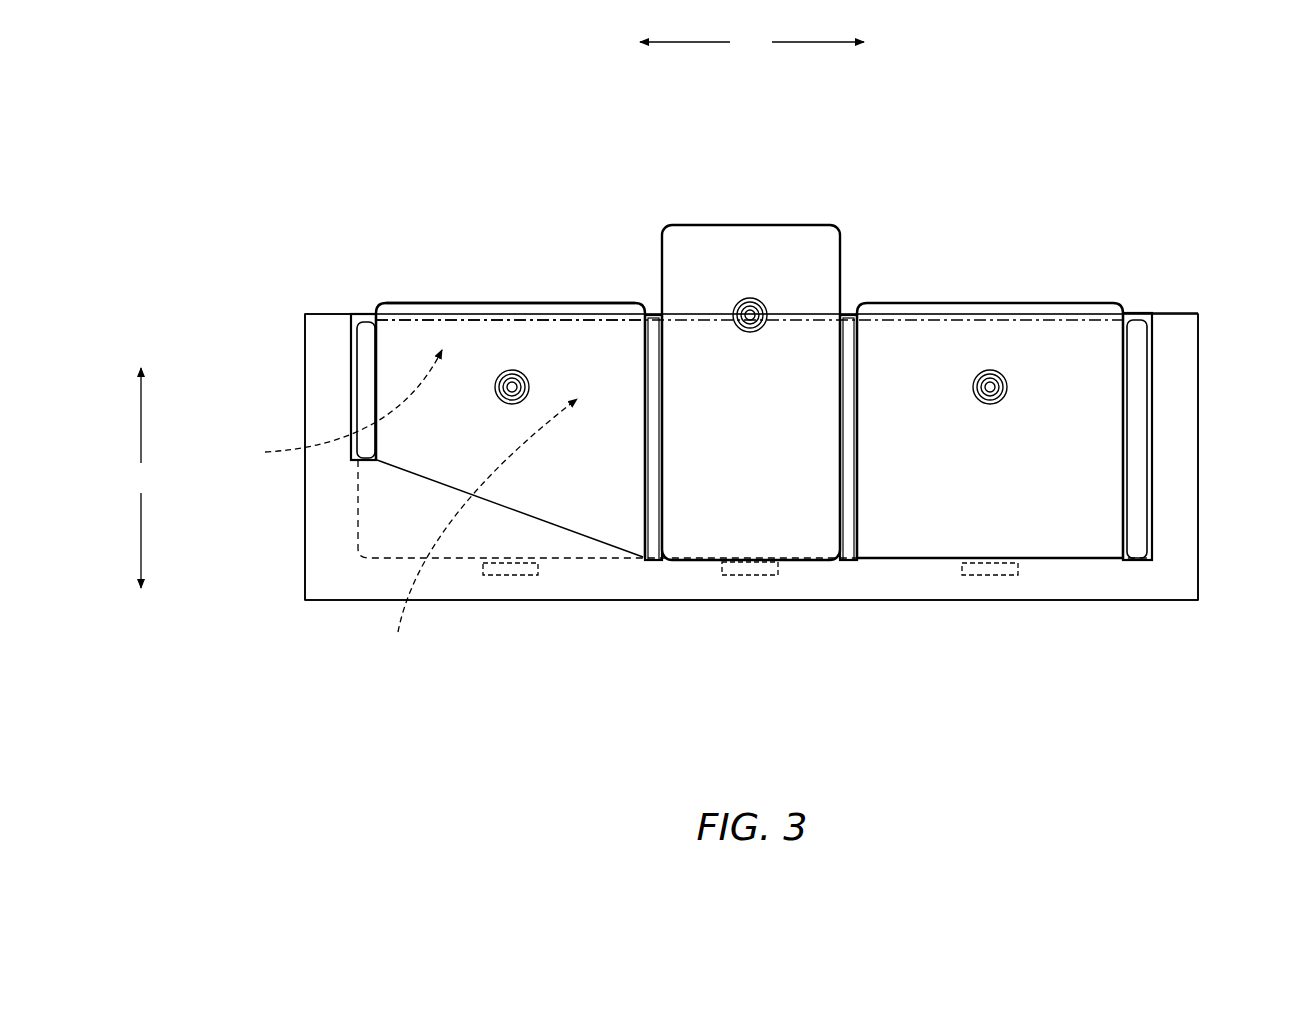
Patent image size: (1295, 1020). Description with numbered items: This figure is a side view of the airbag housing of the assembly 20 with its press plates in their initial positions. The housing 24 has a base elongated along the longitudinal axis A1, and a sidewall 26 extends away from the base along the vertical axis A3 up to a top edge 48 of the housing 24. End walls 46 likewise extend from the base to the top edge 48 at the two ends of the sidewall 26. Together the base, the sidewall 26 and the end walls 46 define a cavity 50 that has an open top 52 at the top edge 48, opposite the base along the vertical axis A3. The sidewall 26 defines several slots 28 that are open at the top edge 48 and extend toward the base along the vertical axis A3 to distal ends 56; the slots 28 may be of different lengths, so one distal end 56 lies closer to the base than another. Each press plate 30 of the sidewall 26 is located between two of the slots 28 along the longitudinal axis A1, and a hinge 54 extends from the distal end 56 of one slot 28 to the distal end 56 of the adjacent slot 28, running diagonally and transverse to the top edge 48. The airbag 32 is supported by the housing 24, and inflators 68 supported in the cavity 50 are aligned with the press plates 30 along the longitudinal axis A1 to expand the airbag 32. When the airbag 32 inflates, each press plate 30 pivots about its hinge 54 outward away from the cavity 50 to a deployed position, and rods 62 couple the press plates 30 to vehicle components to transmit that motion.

The assembly 20 is at (200, 244).
The housing 24 is at (340, 605).
The sidewall 26 is at (612, 513).
The slot 28 is at (364, 302).
The press plate 30 is at (568, 355).
The airbag 32 is at (418, 320).
The end wall 46 is at (312, 378).
The top edge 48 is at (320, 314).
The cavity 50 is at (405, 537).
The open top 52 is at (507, 252).
The hinge 54 is at (560, 530).
The distal end 56 is at (480, 303).
The rod 62 is at (503, 405).
The inflator 68 is at (510, 580).
The longitudinal axis A1 is at (752, 42).
The vertical axis A3 is at (139, 478).